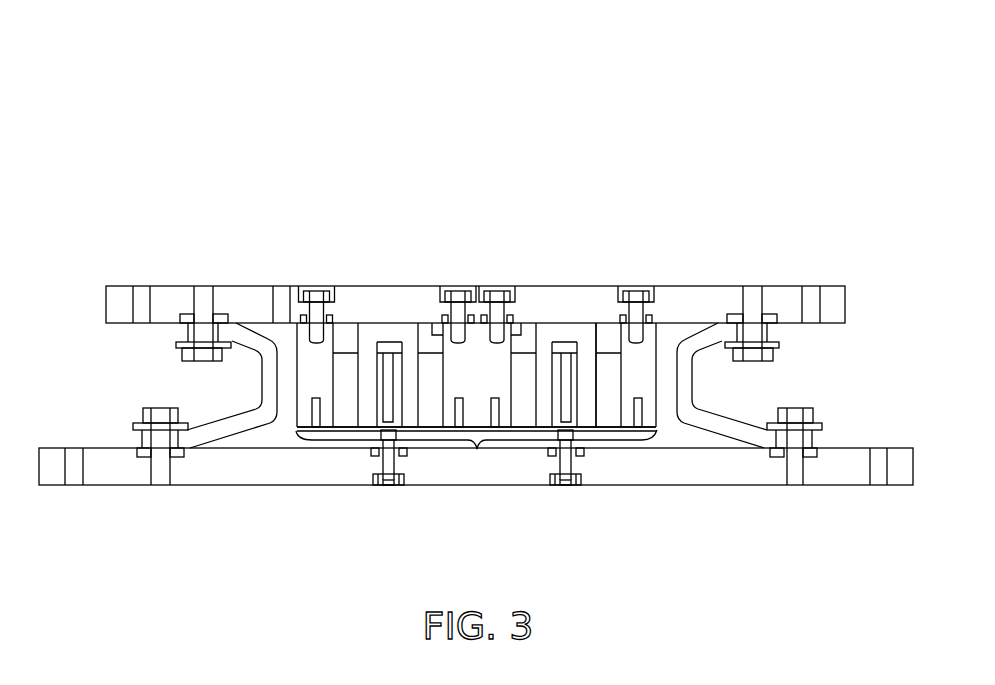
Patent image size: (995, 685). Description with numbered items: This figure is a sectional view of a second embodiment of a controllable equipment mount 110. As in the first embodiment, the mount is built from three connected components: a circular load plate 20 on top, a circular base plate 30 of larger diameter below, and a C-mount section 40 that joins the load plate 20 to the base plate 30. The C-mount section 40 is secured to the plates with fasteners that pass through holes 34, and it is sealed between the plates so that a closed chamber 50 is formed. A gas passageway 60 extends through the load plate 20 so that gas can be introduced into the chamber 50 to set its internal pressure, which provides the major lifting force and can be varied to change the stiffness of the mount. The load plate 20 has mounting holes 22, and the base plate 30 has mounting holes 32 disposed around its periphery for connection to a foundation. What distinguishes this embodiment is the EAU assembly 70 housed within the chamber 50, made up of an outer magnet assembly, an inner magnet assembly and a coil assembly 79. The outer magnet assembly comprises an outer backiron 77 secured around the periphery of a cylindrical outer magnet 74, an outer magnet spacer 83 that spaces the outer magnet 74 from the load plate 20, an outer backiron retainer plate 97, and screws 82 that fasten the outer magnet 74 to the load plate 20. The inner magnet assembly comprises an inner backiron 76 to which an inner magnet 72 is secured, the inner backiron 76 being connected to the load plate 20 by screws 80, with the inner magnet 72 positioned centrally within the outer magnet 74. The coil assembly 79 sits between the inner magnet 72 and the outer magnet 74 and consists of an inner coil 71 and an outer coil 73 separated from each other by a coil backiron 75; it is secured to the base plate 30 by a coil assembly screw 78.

The controllable equipment mount 110 is at (476, 290).
The load plate 20 is at (375, 297).
The mounting holes 22 is at (140, 297).
The base plate 30 is at (830, 477).
The mounting holes 32 is at (73, 477).
The holes 34 is at (527, 335).
The C-mount section 40 is at (262, 394).
The closed chamber 50 is at (257, 440).
The gas passageway 60 is at (282, 297).
The EAU assembly 70 is at (476, 452).
The inner coil 71 is at (557, 412).
The inner magnet 72 is at (423, 405).
The outer coil 73 is at (575, 413).
The outer magnet 74 is at (337, 412).
The coil backiron 75 is at (567, 390).
The inner backiron 76 is at (464, 375).
The outer backiron 77 is at (308, 377).
The coil assembly screw 78 is at (573, 462).
The coil assembly 79 is at (390, 460).
The screws 80 is at (460, 288).
The screws 82 is at (638, 305).
The outer magnet spacer 83 is at (607, 343).
The outer backiron retainer plate 97 is at (640, 428).